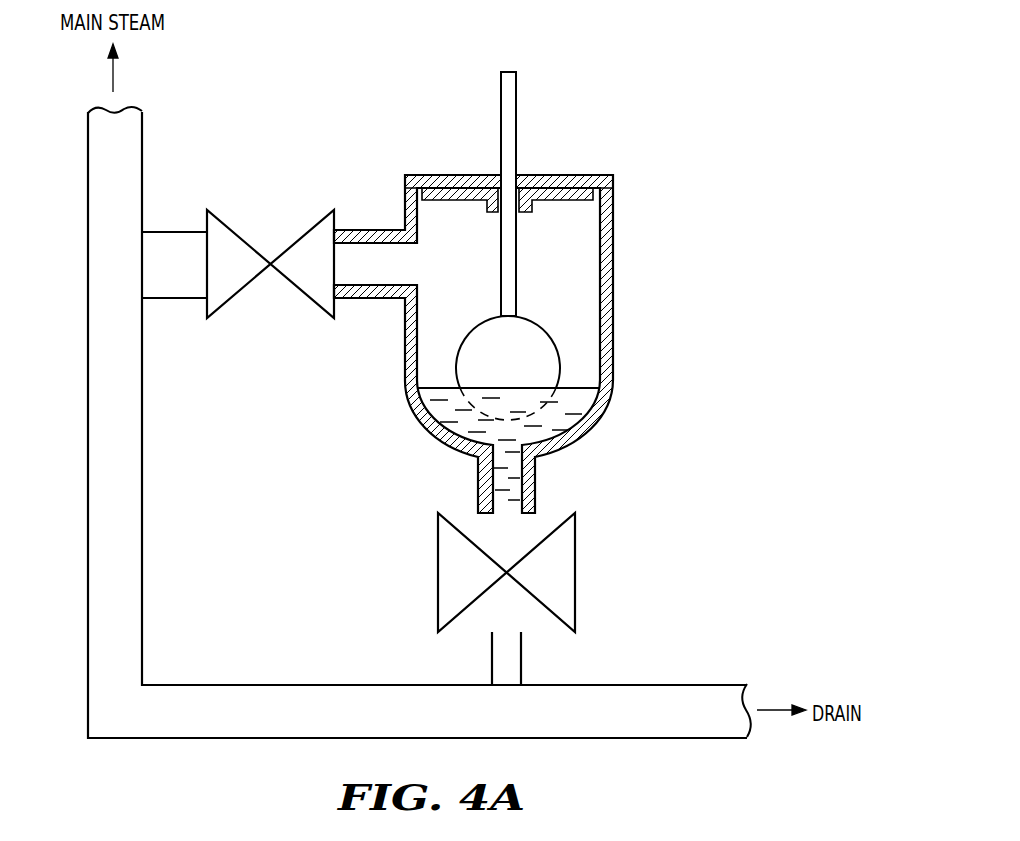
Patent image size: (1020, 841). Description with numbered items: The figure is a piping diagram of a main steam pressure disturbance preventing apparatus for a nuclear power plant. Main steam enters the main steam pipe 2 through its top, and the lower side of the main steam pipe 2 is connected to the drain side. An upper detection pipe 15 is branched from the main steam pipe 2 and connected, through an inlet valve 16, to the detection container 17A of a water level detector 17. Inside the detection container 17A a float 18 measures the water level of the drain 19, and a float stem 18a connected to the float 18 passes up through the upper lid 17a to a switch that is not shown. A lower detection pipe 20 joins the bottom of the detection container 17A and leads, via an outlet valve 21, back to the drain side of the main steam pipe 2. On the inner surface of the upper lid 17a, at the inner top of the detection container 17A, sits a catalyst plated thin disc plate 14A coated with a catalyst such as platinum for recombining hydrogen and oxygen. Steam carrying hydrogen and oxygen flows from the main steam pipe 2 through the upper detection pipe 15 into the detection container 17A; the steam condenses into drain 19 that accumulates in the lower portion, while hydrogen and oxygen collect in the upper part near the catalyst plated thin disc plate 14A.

The main steam pipe 2 is at (148, 140).
The upper detection pipe 15 is at (178, 300).
The inlet valve 16 is at (270, 250).
The water level detector 17 is at (526, 292).
The detection container 17A is at (615, 300).
The upper lid 17a is at (557, 176).
The catalyst plated thin disc plate 14A is at (557, 213).
The float 18 is at (483, 336).
The float stem 18a is at (502, 94).
The drain 19 is at (600, 407).
The lower detection pipe 20 is at (536, 484).
The outlet valve 21 is at (530, 570).